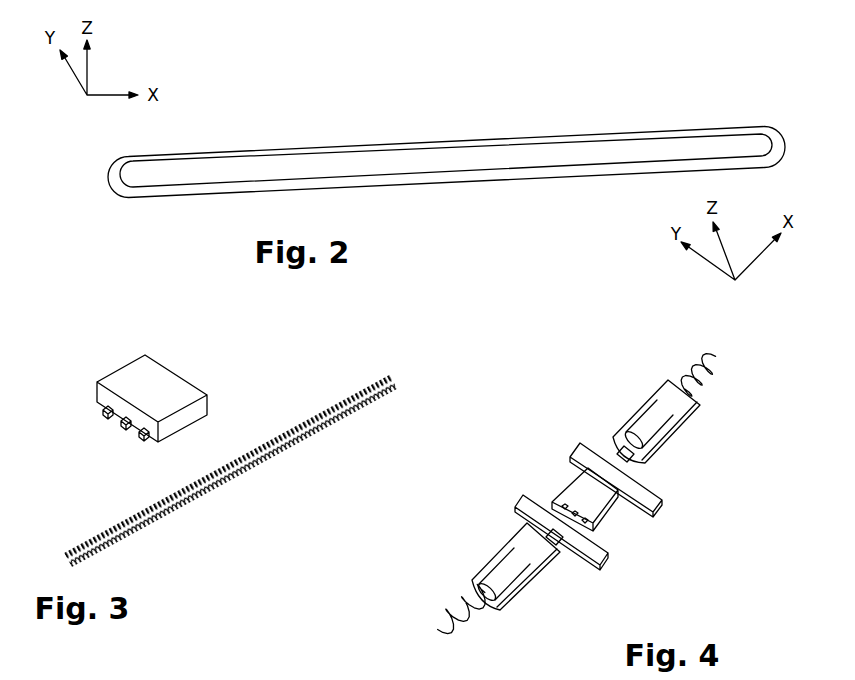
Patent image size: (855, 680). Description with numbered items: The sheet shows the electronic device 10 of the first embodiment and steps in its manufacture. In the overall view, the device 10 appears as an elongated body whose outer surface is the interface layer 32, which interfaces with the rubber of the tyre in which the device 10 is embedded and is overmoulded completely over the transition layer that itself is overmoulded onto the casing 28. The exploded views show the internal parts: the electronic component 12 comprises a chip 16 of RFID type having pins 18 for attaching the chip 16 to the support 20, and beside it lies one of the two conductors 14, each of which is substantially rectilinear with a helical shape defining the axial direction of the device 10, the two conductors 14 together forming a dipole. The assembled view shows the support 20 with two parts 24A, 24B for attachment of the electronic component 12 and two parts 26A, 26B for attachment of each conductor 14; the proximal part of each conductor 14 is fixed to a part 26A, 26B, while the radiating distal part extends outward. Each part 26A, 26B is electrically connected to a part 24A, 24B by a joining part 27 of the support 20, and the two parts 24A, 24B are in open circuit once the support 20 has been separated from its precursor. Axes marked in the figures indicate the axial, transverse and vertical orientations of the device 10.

In FIG. 2, the electronic device 10 is at (253, 148).
In FIG. 2, the interface layer 32 is at (697, 143).
In FIG. 3, the electronic component 12 is at (169, 385).
In FIG. 4, the electronic component 12 is at (631, 486).
In FIG. 3, the chip 16 is at (130, 388).
In FIG. 4, the chip 16 is at (600, 505).
In FIG. 3, the pins 18 is at (142, 440).
In FIG. 4, the pins 18 is at (591, 478).
In FIG. 3, the conductor 14 is at (393, 372).
In FIG. 4, the conductor 14 is at (701, 360).
In FIG. 4, the support 20 is at (573, 464).
In FIG. 4, the part for attachment of the electronic component 24A is at (520, 500).
In FIG. 4, the part for attachment of the electronic component 24B is at (575, 450).
In FIG. 4, the part for attachment of the conductor 26A is at (512, 597).
In FIG. 4, the part for attachment of the conductor 26B is at (690, 418).
In FIG. 4, the joining part 27 is at (640, 478).
In FIG. 4, the casing 28 is at (557, 671).